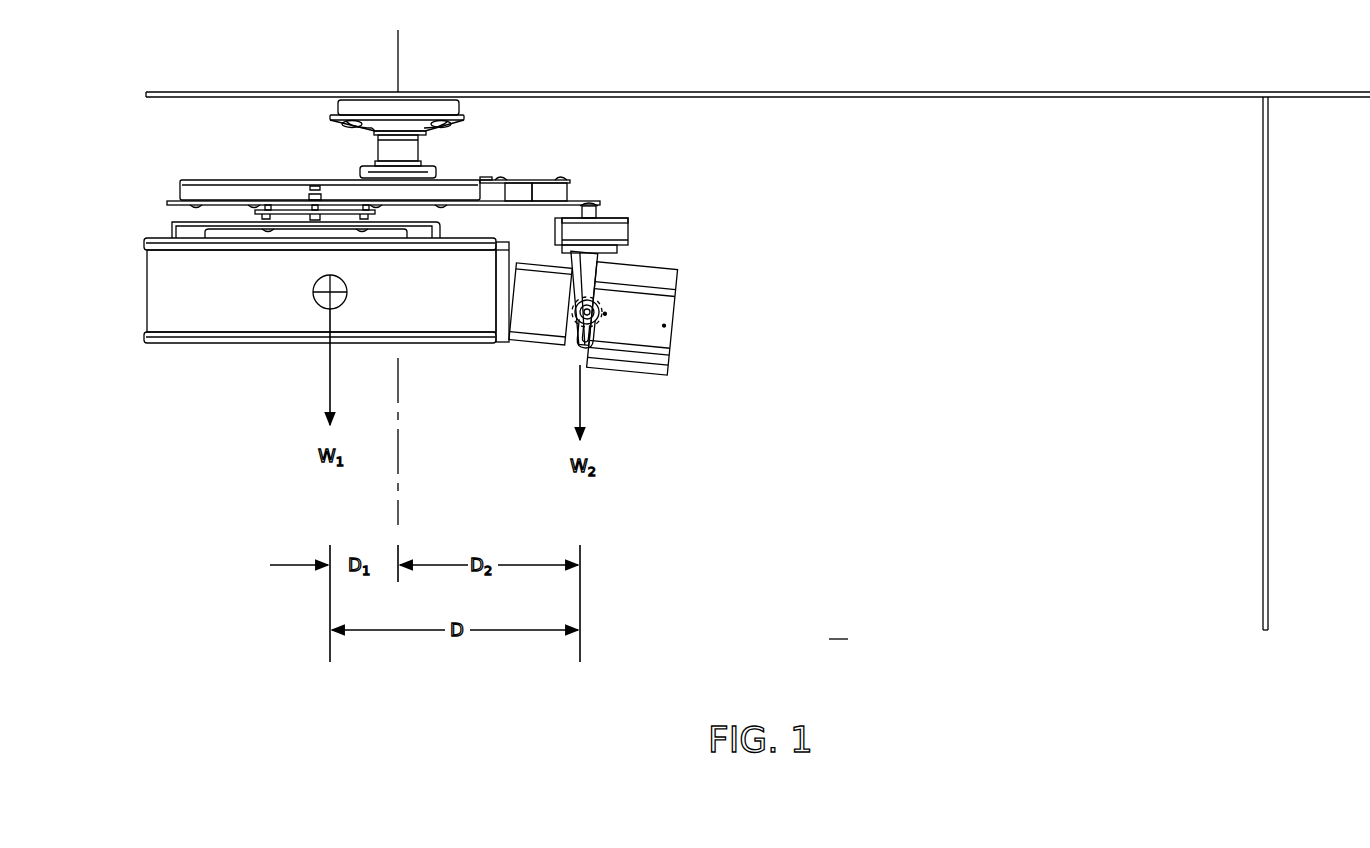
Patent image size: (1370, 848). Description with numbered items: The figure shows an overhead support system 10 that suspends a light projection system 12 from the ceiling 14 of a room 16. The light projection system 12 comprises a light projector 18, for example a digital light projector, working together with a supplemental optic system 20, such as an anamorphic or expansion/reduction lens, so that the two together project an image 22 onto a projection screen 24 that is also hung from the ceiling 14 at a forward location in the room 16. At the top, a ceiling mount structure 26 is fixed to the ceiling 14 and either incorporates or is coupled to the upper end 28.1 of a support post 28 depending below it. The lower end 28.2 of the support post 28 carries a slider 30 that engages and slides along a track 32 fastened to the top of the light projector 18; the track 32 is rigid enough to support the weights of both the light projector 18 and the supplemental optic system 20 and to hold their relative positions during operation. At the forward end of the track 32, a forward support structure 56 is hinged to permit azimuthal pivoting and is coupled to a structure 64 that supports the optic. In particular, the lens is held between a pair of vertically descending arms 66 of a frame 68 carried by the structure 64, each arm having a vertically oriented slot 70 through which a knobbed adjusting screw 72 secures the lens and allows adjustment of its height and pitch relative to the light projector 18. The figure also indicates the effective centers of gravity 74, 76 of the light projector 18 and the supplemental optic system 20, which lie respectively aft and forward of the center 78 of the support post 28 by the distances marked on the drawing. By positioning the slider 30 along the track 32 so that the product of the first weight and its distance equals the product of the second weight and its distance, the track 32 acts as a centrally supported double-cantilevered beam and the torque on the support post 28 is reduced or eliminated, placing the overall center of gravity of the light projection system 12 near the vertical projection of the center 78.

The overhead support system 10 is at (184, 137).
The light projection system 12 is at (200, 418).
The ceiling 14 is at (726, 98).
The room 16 is at (840, 629).
The light projector 18 is at (144, 320).
The supplemental optic system 20 is at (615, 314).
The image 22 is at (1242, 363).
The projection screen 24 is at (1269, 568).
The ceiling mount structure 26 is at (461, 132).
The support post 28 is at (370, 143).
The upper end of the support post 28.1 is at (354, 142).
The lower end of the support post 28.2 is at (369, 167).
The slider 30 is at (432, 177).
The track 32 is at (186, 189).
The forward support structure 56 is at (585, 190).
The structure 64 is at (627, 233).
The vertically descending arms 66 is at (651, 305).
The frame 68 is at (601, 270).
The vertically oriented slot 70 is at (586, 338).
The knobbed adjusting screw 72 is at (608, 315).
The effective center of gravity of the light projector 74 is at (305, 290).
The effective center of gravity of the supplemental optic system 76 is at (558, 318).
The center of the support post 78 is at (405, 57).